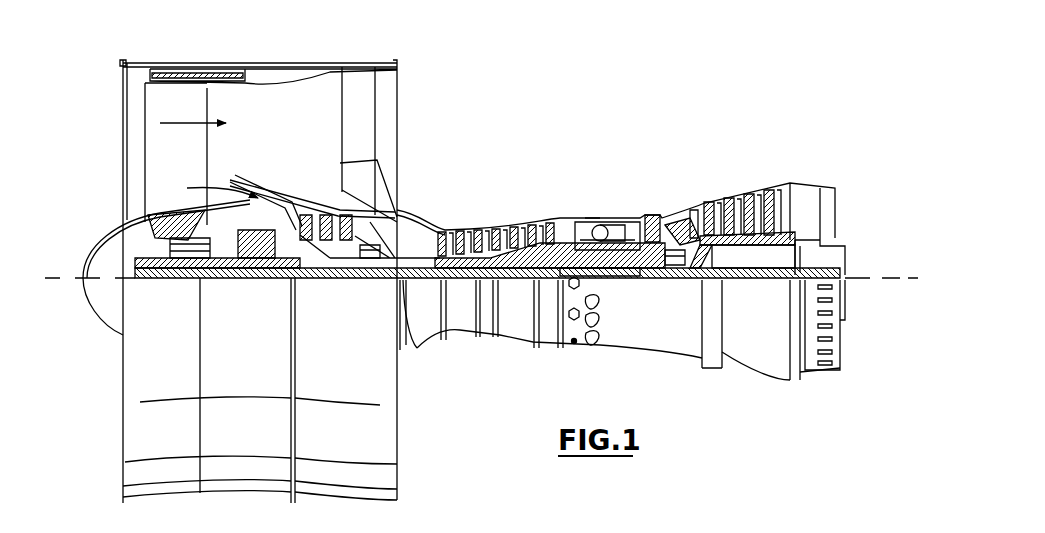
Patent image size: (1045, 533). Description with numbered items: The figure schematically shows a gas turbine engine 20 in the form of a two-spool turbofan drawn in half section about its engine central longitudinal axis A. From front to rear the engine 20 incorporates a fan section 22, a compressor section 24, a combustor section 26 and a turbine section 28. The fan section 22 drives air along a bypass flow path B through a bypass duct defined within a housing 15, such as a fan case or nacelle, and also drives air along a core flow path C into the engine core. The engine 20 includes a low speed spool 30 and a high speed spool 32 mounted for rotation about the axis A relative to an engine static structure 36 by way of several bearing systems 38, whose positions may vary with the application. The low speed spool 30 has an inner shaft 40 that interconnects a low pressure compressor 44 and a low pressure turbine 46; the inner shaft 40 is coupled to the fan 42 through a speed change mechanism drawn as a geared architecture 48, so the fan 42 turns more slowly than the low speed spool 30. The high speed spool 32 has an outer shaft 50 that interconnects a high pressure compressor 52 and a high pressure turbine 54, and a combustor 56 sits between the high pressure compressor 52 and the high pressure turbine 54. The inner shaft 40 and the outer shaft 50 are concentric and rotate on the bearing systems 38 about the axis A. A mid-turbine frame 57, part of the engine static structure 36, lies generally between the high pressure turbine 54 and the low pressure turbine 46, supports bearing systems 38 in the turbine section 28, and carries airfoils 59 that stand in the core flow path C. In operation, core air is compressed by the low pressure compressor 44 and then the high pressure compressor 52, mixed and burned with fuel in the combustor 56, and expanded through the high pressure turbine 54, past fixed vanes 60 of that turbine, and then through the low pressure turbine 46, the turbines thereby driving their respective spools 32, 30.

The gas turbine engine 20 is at (609, 101).
The fan section 22 is at (207, 58).
The housing 15 is at (263, 67).
The fan 42 is at (195, 161).
The low pressure compressor 44 is at (345, 190).
The compressor section 24 is at (550, 211).
The high pressure compressor 52 is at (502, 226).
The high speed spool 32 is at (548, 222).
The combustor section 26 is at (597, 202).
The combustor 56 is at (603, 236).
The fixed vanes 60 is at (650, 214).
The turbine section 28 is at (748, 199).
The high pressure turbine 54 is at (655, 222).
The mid-turbine frame 57 is at (692, 200).
The low pressure turbine 46 is at (749, 190).
The airfoils 59 is at (713, 253).
The low speed spool 30 is at (518, 290).
The engine static structure 36 is at (548, 352).
The outer shaft 50 is at (610, 280).
The bearing systems 38 is at (367, 278).
The geared architecture 48 is at (263, 268).
The inner shaft 40 is at (419, 357).
The engine central longitudinal axis A is at (912, 278).
The bypass flow path B is at (185, 120).
The core flow path C is at (214, 190).